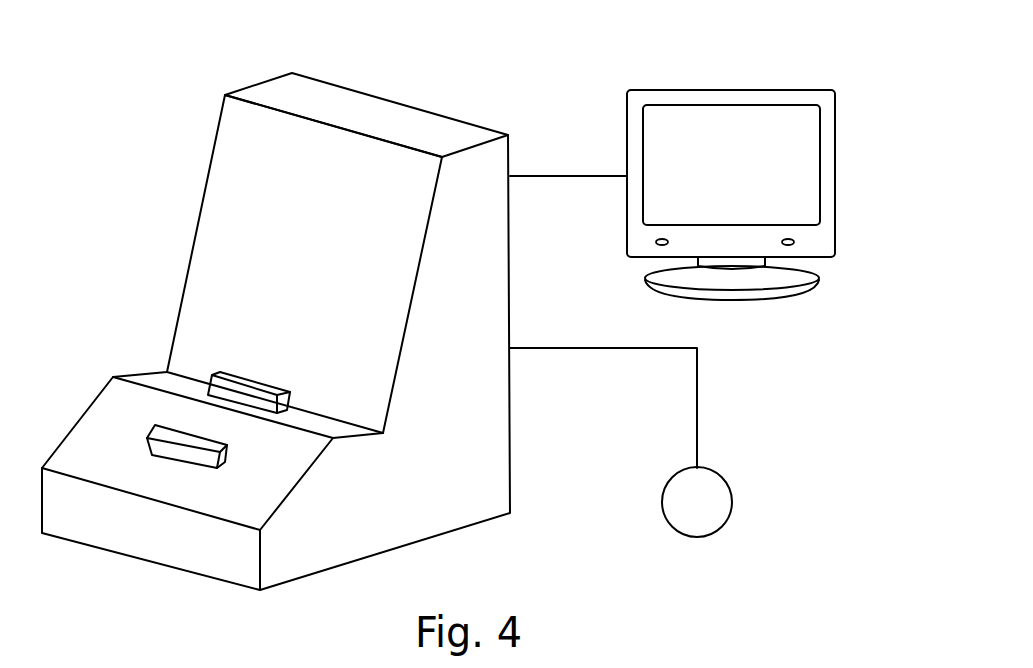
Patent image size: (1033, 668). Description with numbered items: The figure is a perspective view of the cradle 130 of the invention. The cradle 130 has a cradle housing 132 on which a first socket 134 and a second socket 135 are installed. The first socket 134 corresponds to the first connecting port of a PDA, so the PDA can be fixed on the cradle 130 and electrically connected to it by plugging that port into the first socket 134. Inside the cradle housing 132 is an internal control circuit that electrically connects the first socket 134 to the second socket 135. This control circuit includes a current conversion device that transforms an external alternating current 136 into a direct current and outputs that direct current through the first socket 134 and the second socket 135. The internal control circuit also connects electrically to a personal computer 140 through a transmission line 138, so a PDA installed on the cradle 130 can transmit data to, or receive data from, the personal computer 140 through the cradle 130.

The cradle 130 is at (490, 98).
The cradle housing 132 is at (458, 478).
The first socket 134 is at (247, 373).
The second socket 135 is at (157, 432).
The external alternating current 136 is at (725, 478).
The transmission line 138 is at (588, 177).
The personal computer 140 is at (732, 91).